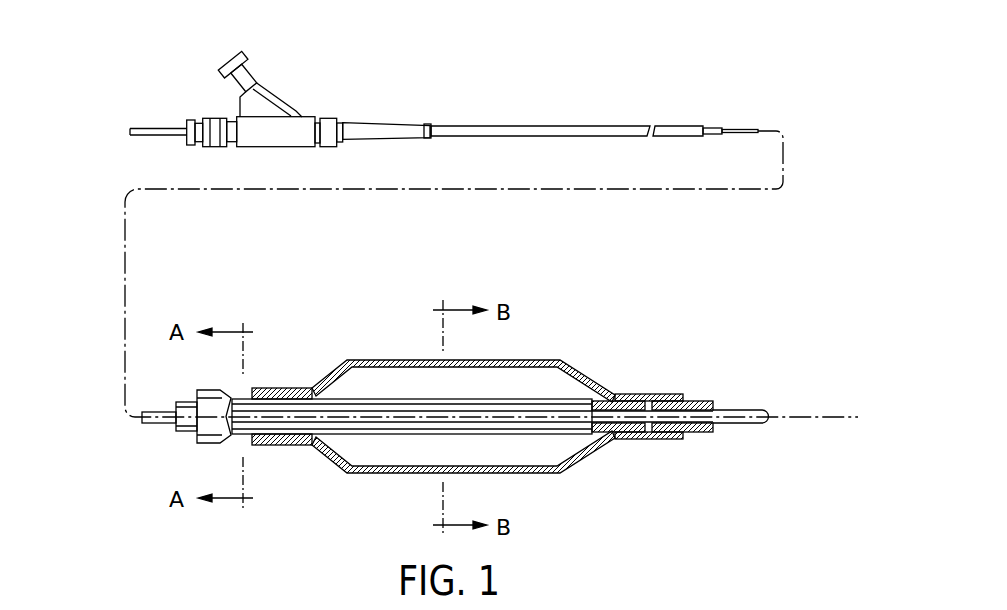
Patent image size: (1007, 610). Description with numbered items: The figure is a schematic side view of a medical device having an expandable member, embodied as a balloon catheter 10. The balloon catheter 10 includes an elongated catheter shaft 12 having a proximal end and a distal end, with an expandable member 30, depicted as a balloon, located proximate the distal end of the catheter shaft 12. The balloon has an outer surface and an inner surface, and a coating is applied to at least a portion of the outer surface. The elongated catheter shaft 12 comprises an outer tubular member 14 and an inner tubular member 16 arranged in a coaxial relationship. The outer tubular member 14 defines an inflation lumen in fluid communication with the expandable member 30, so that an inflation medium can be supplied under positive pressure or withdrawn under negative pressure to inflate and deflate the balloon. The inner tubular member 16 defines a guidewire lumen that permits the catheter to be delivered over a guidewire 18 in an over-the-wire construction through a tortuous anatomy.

The balloon catheter 10 is at (522, 103).
The elongated catheter shaft 12 is at (558, 137).
The outer tubular member 14 is at (678, 137).
The inner tubular member 16 is at (713, 123).
The guidewire 18 is at (737, 132).
The expandable member 30 is at (375, 387).